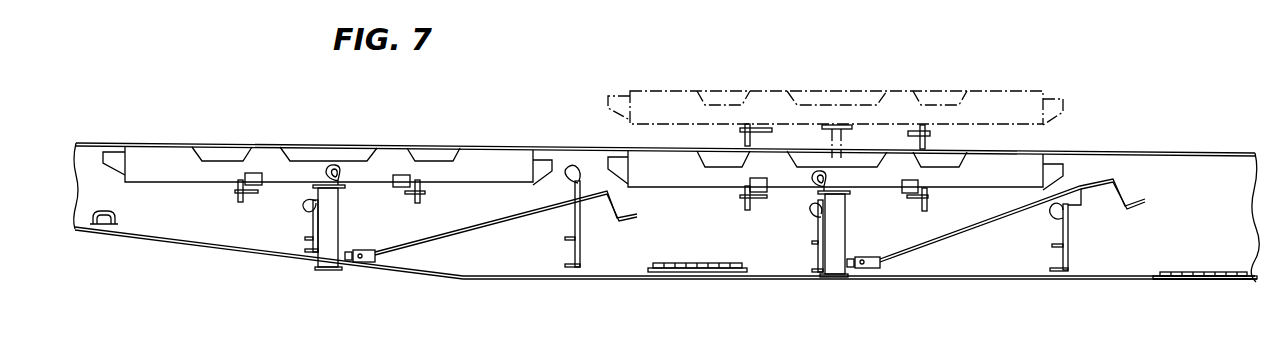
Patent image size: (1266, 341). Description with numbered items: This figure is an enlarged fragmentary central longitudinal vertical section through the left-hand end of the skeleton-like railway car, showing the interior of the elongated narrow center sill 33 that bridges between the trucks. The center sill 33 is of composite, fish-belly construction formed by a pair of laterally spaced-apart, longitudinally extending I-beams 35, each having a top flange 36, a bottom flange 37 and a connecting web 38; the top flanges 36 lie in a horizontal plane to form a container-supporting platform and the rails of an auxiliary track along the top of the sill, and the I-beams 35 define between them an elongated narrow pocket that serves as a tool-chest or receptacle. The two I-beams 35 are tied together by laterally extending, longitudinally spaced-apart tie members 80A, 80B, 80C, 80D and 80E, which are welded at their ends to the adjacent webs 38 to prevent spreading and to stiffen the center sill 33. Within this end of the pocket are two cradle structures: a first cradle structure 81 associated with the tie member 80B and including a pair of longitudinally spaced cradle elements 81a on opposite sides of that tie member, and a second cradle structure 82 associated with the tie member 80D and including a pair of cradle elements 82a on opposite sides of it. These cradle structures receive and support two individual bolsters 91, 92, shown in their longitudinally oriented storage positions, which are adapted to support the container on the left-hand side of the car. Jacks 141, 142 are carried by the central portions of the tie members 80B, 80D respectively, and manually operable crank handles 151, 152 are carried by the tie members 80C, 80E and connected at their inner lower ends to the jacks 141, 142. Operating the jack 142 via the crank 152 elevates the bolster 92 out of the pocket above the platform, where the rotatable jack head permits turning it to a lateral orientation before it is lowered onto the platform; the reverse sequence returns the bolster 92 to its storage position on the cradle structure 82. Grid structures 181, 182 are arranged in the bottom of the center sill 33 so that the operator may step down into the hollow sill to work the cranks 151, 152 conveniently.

The center sill 33 is at (452, 302).
The I-beam 35 is at (962, 285).
The top flange 36 is at (1219, 152).
The bottom flange 37 is at (1197, 281).
The web 38 is at (1214, 226).
The tie member 80A is at (112, 212).
The tie member 80B is at (313, 225).
The tie member 80C is at (580, 232).
The tie member 80D is at (818, 230).
The tie member 80E is at (1068, 238).
The first cradle structure 81 is at (353, 188).
The cradle element 81a is at (262, 186).
The second cradle structure 82 is at (867, 198).
The cradle element 82a is at (765, 193).
The bolster 91 is at (503, 176).
The bolster 92 is at (1016, 183).
The jack 141 is at (327, 270).
The jack 142 is at (837, 278).
The crank handle 151 is at (473, 228).
The crank handle 152 is at (968, 230).
The grid structure 181 is at (717, 273).
The grid structure 182 is at (1167, 282).